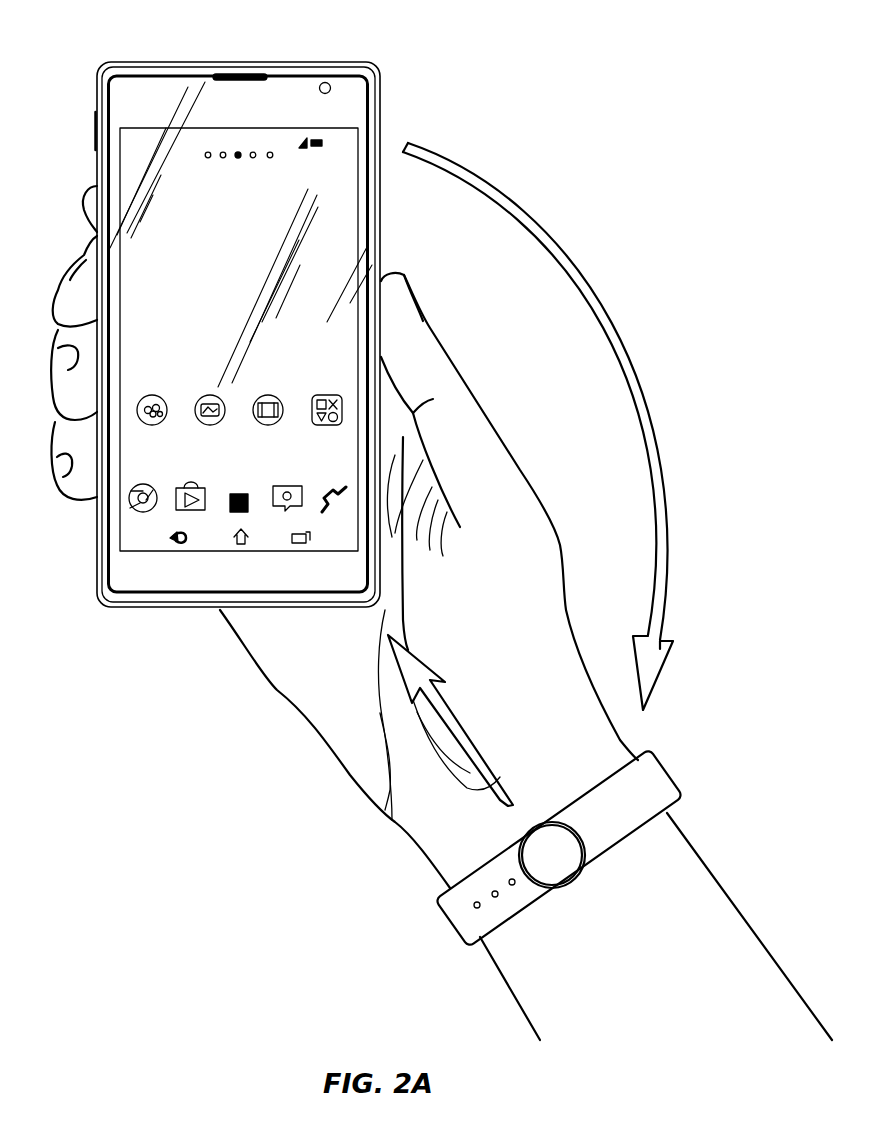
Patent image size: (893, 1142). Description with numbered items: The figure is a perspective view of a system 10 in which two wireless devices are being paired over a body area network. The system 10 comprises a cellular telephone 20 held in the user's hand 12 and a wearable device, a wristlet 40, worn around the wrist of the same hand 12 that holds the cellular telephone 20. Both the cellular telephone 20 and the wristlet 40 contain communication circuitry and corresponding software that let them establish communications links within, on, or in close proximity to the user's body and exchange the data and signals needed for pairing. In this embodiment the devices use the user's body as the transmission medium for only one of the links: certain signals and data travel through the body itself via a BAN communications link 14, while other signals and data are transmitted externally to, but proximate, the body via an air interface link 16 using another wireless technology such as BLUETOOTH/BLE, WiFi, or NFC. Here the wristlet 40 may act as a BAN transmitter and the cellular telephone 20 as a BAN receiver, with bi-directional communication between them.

The system 10 is at (566, 134).
The hand 12 is at (533, 553).
The BAN communications link 14 is at (460, 747).
The air interface link 16 is at (613, 329).
The cellular telephone 20 is at (129, 63).
The wristlet 40 is at (688, 749).